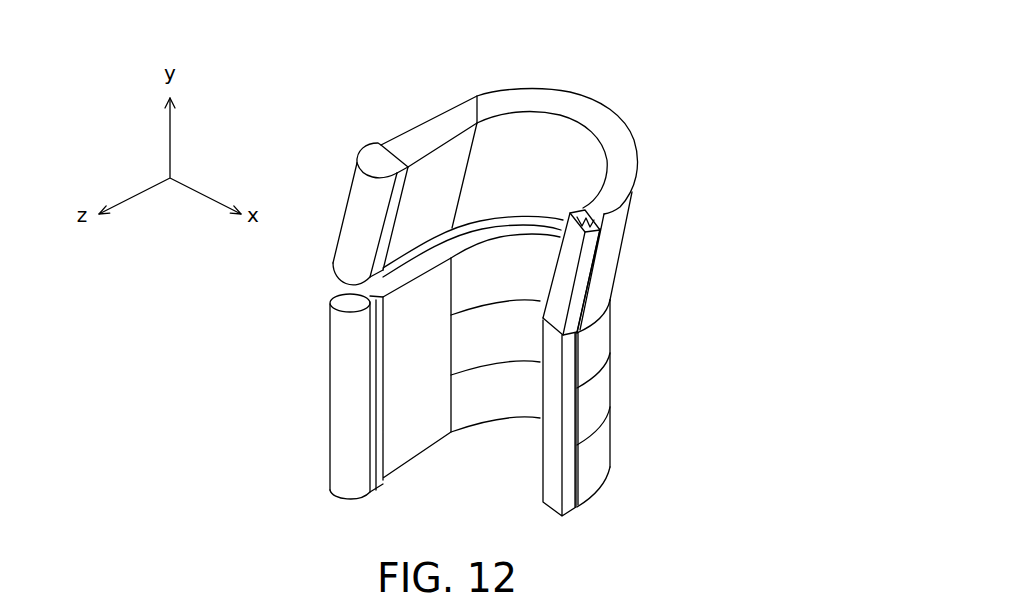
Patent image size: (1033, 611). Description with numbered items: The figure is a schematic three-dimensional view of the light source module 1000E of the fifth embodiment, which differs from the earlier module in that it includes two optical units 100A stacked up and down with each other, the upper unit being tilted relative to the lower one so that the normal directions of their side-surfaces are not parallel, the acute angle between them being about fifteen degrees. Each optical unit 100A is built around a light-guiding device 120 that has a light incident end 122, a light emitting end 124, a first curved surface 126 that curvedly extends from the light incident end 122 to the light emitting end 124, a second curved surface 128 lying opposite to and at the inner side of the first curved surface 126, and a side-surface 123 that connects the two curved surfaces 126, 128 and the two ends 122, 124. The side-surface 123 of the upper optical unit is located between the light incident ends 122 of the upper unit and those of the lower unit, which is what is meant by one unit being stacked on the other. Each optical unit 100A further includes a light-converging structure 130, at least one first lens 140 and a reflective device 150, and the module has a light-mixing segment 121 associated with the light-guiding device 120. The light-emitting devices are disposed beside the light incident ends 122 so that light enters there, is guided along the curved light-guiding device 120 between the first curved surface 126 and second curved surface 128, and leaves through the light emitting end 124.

The optical unit 100A is at (693, 428).
The light-guiding device 120 is at (560, 105).
The light-mixing segment 121 is at (437, 168).
The light incident end 122 is at (606, 209).
The side-surface 123 is at (495, 236).
The light emitting end 124 is at (475, 110).
The first curved surface 126 is at (612, 120).
The second curved surface 128 is at (608, 165).
The light-converging structure 130 is at (595, 223).
The first lens 140 is at (350, 259).
The reflective device 150 is at (567, 278).
The light source module 1000E is at (740, 546).